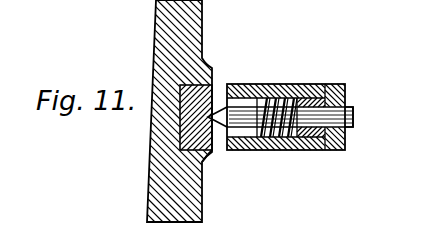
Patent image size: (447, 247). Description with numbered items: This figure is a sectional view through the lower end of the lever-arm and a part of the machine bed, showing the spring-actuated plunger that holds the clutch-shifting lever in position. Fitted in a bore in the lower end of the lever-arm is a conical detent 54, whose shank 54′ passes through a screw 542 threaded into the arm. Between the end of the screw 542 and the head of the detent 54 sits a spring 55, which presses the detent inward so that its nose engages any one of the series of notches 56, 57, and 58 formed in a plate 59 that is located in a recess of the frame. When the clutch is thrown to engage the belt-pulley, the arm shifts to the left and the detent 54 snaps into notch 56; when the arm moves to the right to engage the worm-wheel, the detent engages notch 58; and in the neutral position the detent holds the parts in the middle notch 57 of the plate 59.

The conical detent 54 is at (241, 99).
The shank 54′ is at (353, 112).
The screw 542 is at (355, 72).
The spring 55 is at (268, 150).
The notch 56 is at (213, 145).
The notch 57 is at (213, 99).
The notch 58 is at (172, 90).
The plate 59 is at (195, 128).